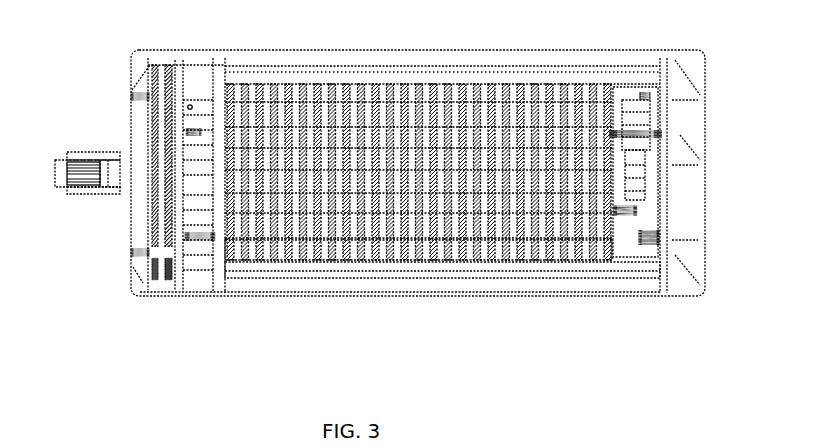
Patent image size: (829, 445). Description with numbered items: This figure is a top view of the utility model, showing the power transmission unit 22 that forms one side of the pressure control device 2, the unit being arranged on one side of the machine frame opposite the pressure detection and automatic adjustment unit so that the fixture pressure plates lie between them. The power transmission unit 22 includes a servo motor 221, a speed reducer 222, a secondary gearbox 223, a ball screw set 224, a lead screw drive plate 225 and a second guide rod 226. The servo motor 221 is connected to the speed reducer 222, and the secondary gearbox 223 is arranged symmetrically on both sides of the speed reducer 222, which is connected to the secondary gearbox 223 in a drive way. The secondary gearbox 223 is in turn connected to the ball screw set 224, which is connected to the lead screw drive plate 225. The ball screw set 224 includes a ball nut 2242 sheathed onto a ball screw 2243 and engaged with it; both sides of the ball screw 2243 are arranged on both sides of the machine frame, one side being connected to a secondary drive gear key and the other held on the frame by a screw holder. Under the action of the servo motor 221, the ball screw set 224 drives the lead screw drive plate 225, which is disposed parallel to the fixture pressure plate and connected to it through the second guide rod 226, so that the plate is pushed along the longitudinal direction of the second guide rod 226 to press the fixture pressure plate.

The pressure control device 2 is at (143, 192).
The power transmission unit 22 is at (98, 200).
The servo motor 221 is at (79, 152).
The speed reducer 222 is at (136, 159).
The secondary gearbox 223 is at (171, 106).
The ball screw set 224 is at (246, 70).
The lead screw drive plate 225 is at (231, 118).
The second guide rod 226 is at (619, 91).
The ball nut 2242 is at (222, 276).
The ball screw 2243 is at (311, 273).